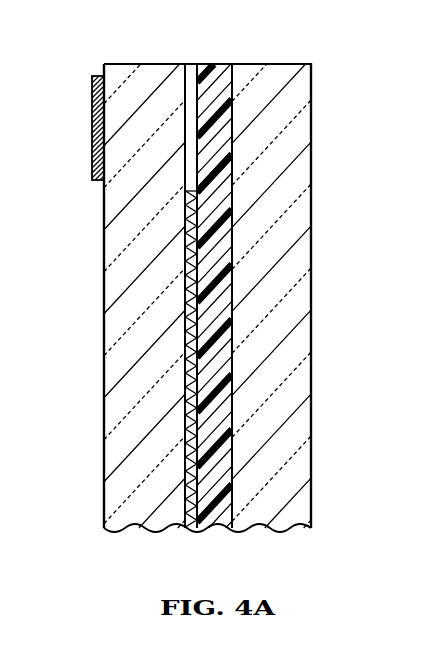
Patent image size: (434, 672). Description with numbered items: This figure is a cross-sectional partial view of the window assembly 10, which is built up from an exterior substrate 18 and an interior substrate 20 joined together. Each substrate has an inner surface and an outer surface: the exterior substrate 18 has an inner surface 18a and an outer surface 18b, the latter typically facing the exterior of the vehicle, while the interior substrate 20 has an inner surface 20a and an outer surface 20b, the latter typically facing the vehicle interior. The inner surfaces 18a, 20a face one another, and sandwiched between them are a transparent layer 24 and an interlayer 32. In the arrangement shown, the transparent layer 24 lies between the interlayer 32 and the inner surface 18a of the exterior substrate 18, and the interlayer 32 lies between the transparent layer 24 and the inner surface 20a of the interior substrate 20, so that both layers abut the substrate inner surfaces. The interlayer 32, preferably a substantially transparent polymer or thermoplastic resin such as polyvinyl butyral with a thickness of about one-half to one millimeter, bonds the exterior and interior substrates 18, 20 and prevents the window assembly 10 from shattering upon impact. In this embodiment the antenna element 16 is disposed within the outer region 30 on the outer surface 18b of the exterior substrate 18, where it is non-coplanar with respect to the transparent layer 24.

The window assembly 10 is at (113, 55).
The antenna element 16 is at (93, 122).
The exterior substrate 18 is at (114, 410).
The inner surface of the exterior substrate 18a is at (186, 76).
The outer surface of the exterior substrate 18b is at (103, 70).
The interior substrate 20 is at (293, 390).
The inner surface of the interior substrate 20a is at (226, 78).
The outer surface of the interior substrate 20b is at (311, 76).
The transparent layer 24 is at (188, 276).
The outer region 30 is at (190, 173).
The interlayer 32 is at (222, 205).